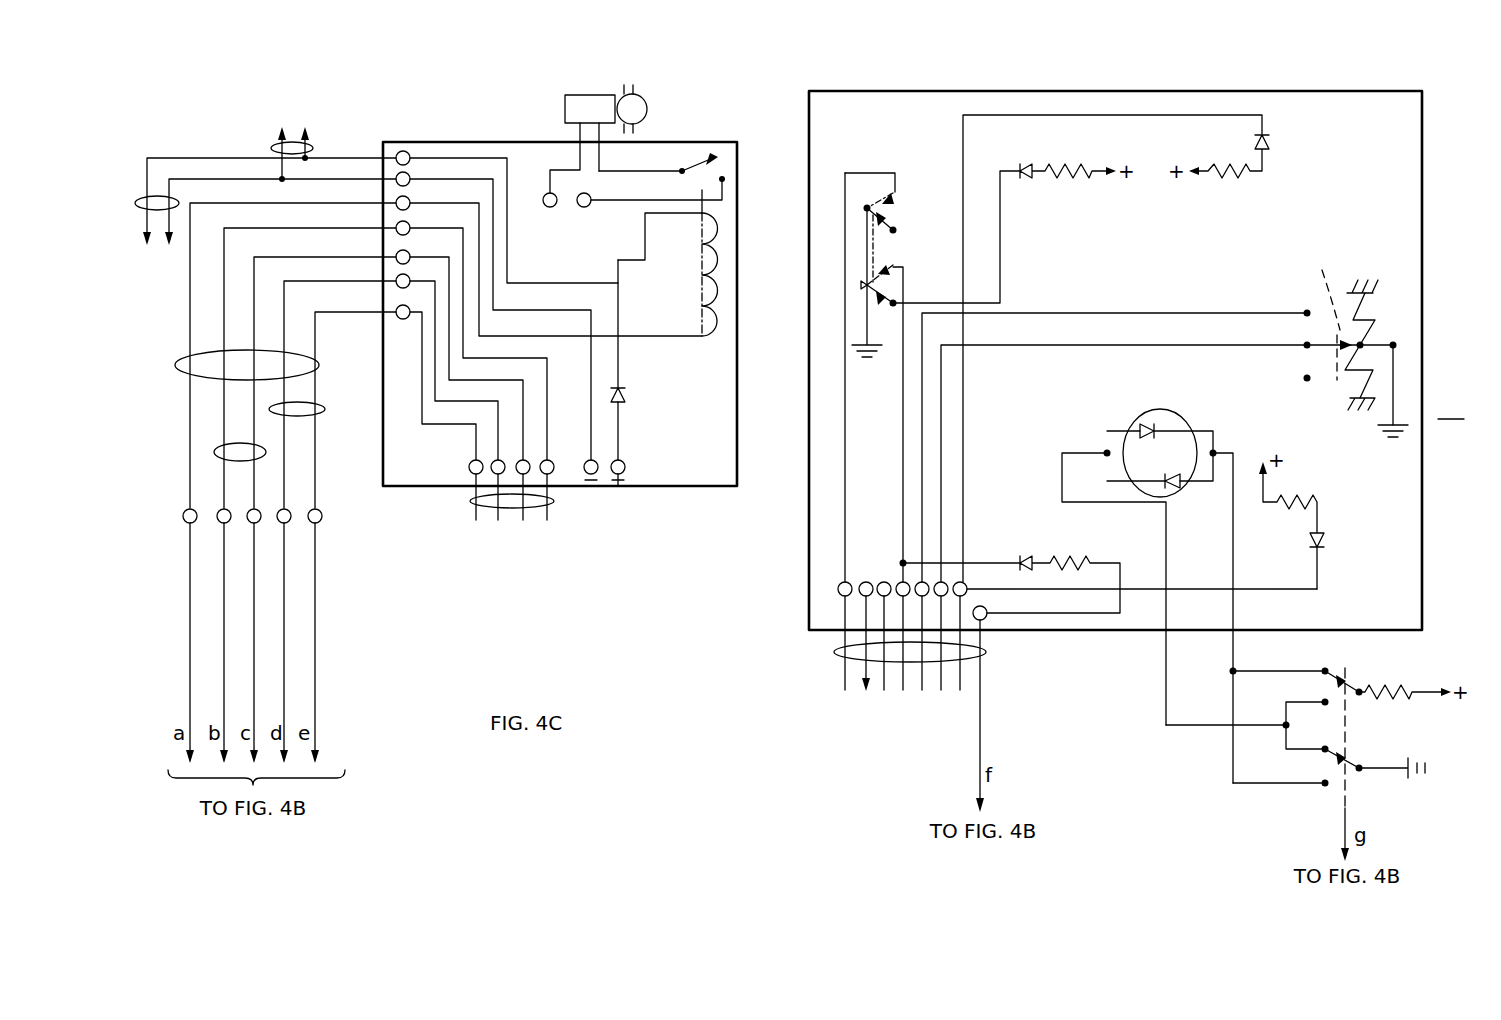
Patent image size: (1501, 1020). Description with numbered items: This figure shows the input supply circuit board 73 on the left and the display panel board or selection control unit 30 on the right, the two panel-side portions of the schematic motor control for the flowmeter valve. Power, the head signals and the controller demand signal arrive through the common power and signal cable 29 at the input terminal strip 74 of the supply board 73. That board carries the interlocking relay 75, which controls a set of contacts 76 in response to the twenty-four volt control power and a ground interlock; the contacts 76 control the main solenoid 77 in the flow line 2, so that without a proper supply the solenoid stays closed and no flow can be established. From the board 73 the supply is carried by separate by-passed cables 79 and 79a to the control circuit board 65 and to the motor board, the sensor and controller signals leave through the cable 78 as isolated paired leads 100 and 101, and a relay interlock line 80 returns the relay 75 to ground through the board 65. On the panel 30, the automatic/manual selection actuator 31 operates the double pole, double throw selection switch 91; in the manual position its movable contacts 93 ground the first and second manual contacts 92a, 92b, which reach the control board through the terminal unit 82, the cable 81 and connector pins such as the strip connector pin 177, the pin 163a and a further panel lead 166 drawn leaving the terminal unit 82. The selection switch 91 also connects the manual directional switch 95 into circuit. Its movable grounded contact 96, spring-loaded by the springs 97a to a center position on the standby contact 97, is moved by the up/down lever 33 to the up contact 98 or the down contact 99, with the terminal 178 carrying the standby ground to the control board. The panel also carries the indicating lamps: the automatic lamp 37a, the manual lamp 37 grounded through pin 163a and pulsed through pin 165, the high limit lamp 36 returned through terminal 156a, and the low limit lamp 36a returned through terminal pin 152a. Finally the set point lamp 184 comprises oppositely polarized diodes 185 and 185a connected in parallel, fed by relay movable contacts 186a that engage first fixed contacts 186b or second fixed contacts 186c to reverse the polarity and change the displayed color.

The flow line 2 is at (663, 98).
The power and signal cable 29 is at (470, 503).
The selection control unit (display panel board) 30 is at (1422, 606).
The automatic/manual selection actuator 31 is at (870, 245).
The up/down directional control lever 33 is at (1330, 313).
The high limit lamp 36 is at (1248, 143).
The low limit lamp 36a is at (1309, 540).
The manual lamp 37 is at (1044, 548).
The automatic indication lamp 37a is at (1028, 166).
The control circuit board 65 is at (1451, 408).
The input supply circuit board 73 is at (722, 387).
The input terminal strip 74 is at (463, 466).
The interlocking relay 75 is at (712, 276).
The contacts 76 is at (717, 163).
The main solenoid 77 is at (563, 108).
The cable 78 is at (318, 363).
The cable 79 is at (274, 148).
The cable 79a is at (137, 201).
The relay interlock line 80 is at (190, 428).
The cable 81 is at (836, 650).
The connection or terminal unit 82 is at (838, 592).
The manual/auto selection switch 91 is at (887, 320).
The first manual contact 92a is at (893, 192).
The second manual contact 92b is at (905, 273).
The movable contacts 93 is at (860, 215).
The manual directional switch 95 is at (1393, 330).
The movable grounded contact 96 is at (1320, 343).
The standby contact 97 is at (1300, 353).
The springs 97a is at (1375, 320).
The up contact 98 is at (1308, 310).
The down contact 99 is at (1307, 380).
The paired leads 100 is at (324, 410).
The paired leads 101 is at (266, 452).
The terminal pin 152a is at (963, 580).
The terminal 156a is at (952, 580).
The pin 163a is at (903, 690).
The pin 165 is at (985, 620).
The conductor 166 is at (922, 690).
The strip connector pin 177 is at (844, 685).
The terminal 178 is at (941, 690).
The set point lamp 184 is at (1130, 429).
The L.E.D. display element (diode) 185 is at (1145, 425).
The L.E.D. display element (diode) 185a is at (1173, 476).
The movable contacts 186a is at (1355, 755).
The first fixed contacts 186b is at (1320, 642).
The second fixed contacts 186c is at (1323, 702).